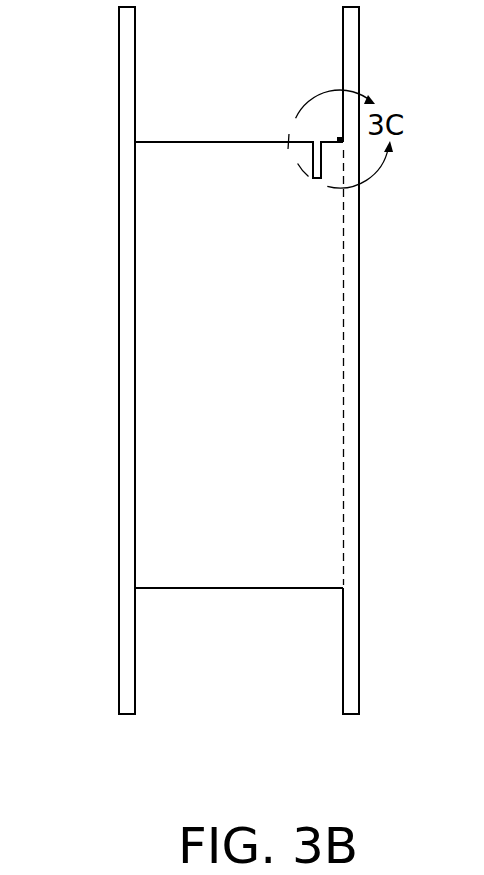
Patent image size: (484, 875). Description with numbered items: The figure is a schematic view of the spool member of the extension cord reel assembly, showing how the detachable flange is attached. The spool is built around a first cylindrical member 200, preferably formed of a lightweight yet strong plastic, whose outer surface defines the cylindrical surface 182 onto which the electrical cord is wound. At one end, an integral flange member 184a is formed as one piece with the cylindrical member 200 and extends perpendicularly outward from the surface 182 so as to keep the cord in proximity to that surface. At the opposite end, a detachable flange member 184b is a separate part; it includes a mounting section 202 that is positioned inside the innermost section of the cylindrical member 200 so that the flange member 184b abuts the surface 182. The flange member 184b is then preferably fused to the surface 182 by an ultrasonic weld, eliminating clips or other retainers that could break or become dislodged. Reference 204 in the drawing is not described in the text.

The integral flange member 184a is at (119, 73).
The detachable flange member 184b is at (360, 33).
The cylindrical surface 182 is at (240, 141).
The mounting section 202 is at (337, 139).
The slot 204 is at (332, 162).
The first cylindrical member 200 is at (233, 615).